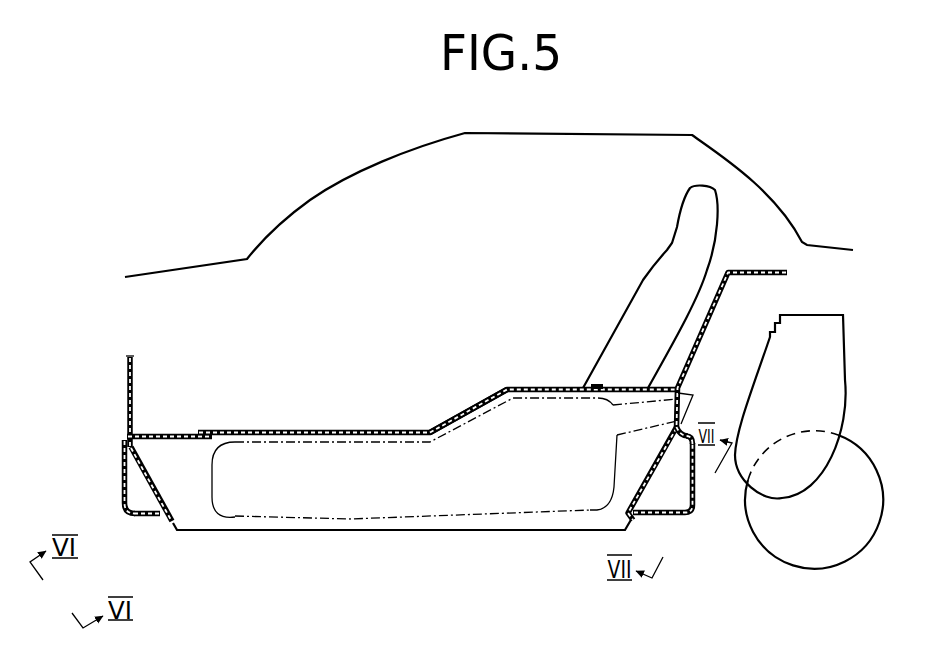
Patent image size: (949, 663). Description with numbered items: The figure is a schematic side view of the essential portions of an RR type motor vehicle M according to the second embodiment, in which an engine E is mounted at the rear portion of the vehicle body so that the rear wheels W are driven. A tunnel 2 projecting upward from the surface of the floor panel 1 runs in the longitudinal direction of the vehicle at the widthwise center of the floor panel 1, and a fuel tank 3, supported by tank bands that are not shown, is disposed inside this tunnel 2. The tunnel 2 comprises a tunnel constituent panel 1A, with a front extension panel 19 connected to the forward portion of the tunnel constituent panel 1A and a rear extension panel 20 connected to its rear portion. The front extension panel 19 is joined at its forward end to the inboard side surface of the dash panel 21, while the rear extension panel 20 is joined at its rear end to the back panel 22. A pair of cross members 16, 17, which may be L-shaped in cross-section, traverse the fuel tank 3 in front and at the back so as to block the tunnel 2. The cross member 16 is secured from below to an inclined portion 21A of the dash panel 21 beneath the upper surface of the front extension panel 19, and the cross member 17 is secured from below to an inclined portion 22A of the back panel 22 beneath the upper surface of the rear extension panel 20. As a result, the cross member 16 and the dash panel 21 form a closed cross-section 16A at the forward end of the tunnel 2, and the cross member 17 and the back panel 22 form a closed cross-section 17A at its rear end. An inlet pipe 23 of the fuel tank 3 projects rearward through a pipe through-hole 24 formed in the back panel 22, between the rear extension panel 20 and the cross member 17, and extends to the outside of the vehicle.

The floor panel 1 is at (442, 532).
The tunnel constituent panel 1A is at (458, 418).
The tunnel 2 is at (377, 426).
The fuel tank 3 is at (295, 440).
The cross member 16 is at (122, 470).
The closed cross-section 16A is at (143, 498).
The cross member 17 is at (650, 516).
The closed cross-section 17A is at (686, 491).
The front extension panel 19 is at (165, 434).
The rear extension panel 20 is at (627, 387).
The dash panel 21 is at (134, 382).
The inclined portion 21A is at (148, 473).
The back panel 22 is at (718, 313).
The inclined portion 22A is at (648, 473).
The inlet pipe 23 is at (680, 388).
The pipe through-hole 24 is at (678, 425).
The motor vehicle M is at (308, 196).
The engine E is at (808, 313).
The rear wheels W is at (884, 493).